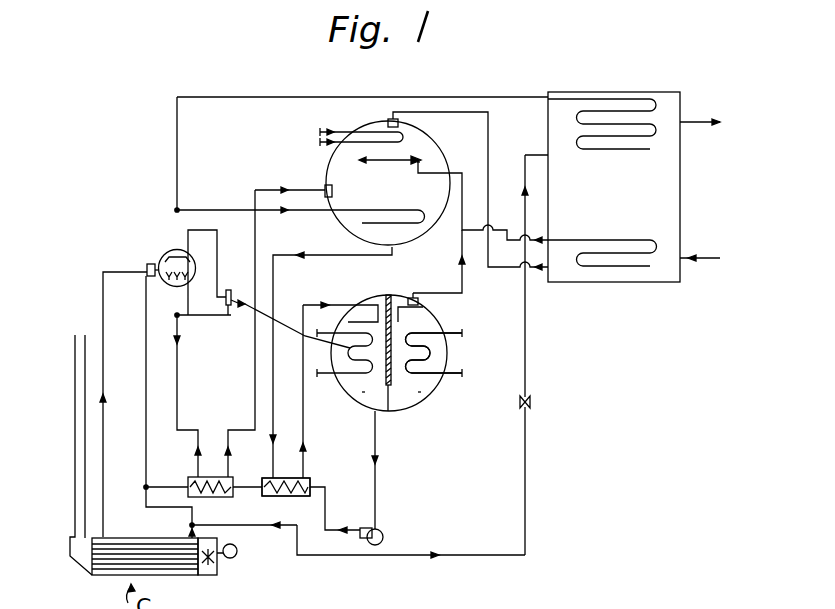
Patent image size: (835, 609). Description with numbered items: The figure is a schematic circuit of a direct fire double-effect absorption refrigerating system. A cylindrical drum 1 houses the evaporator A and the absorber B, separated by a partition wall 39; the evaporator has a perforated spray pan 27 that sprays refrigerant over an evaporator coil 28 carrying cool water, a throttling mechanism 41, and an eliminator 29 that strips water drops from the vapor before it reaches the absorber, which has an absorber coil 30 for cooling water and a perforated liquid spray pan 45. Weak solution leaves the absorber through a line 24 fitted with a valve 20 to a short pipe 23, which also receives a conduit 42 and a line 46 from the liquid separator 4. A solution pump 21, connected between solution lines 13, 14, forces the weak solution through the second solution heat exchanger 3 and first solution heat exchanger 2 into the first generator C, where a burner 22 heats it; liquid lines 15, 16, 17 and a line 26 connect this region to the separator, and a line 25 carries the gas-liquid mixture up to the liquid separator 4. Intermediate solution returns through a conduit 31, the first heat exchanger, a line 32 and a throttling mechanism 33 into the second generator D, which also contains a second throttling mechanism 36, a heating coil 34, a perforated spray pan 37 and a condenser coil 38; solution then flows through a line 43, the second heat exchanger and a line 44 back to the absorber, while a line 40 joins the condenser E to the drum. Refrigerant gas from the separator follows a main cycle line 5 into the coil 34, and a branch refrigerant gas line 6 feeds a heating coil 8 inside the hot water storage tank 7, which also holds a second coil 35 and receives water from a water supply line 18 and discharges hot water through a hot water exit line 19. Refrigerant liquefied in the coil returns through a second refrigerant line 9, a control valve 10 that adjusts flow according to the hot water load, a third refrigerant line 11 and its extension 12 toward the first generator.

The cylindrical drum 1 is at (447, 384).
The first solution heat exchanger 2 is at (218, 440).
The second solution heat exchanger 3 is at (316, 482).
The liquid separator 4 is at (163, 253).
The main cycle line 5 is at (200, 210).
The refrigerant gas line 6 is at (223, 97).
The hot water storage tank 7 is at (672, 92).
The heating coil 8 is at (656, 130).
The second refrigerant line 9 is at (528, 336).
The control valve 10 is at (532, 402).
The third refrigerant line 11 is at (527, 486).
The extension 12 is at (193, 525).
The solution line 13 is at (377, 492).
The solution line 14 is at (327, 516).
The liquid line 15 is at (256, 478).
The liquid line 16 is at (175, 486).
The liquid line 17 is at (158, 507).
The water supply line 18 is at (698, 262).
The hot water exit line 19 is at (696, 120).
The valve 20 is at (244, 306).
The solution pump 21 is at (384, 537).
The burner 22 is at (236, 556).
The short pipe 23 is at (236, 281).
The line 24 is at (300, 322).
The line 25 is at (105, 352).
The line 26 is at (146, 403).
The perforated spray pan 27 is at (428, 309).
The evaporator coil 28 is at (432, 346).
The eliminator 29 is at (437, 385).
The absorber coil 30 is at (352, 374).
The conduit 31 is at (179, 382).
The line 32 is at (263, 190).
The throttling mechanism 33 is at (326, 198).
The coil 34 is at (425, 210).
The second coil 35 is at (655, 250).
The throttling mechanism 36 is at (391, 119).
The perforated spray pan 37 is at (440, 167).
The condenser coil 38 is at (366, 126).
The partition wall 39 is at (398, 414).
The line 40 is at (467, 278).
The throttling mechanism 41 is at (412, 298).
The conduit 42 is at (203, 316).
The line 43 is at (322, 260).
The line 44 is at (302, 397).
The perforated liquid spray pan 45 is at (384, 310).
The line 46 is at (220, 252).